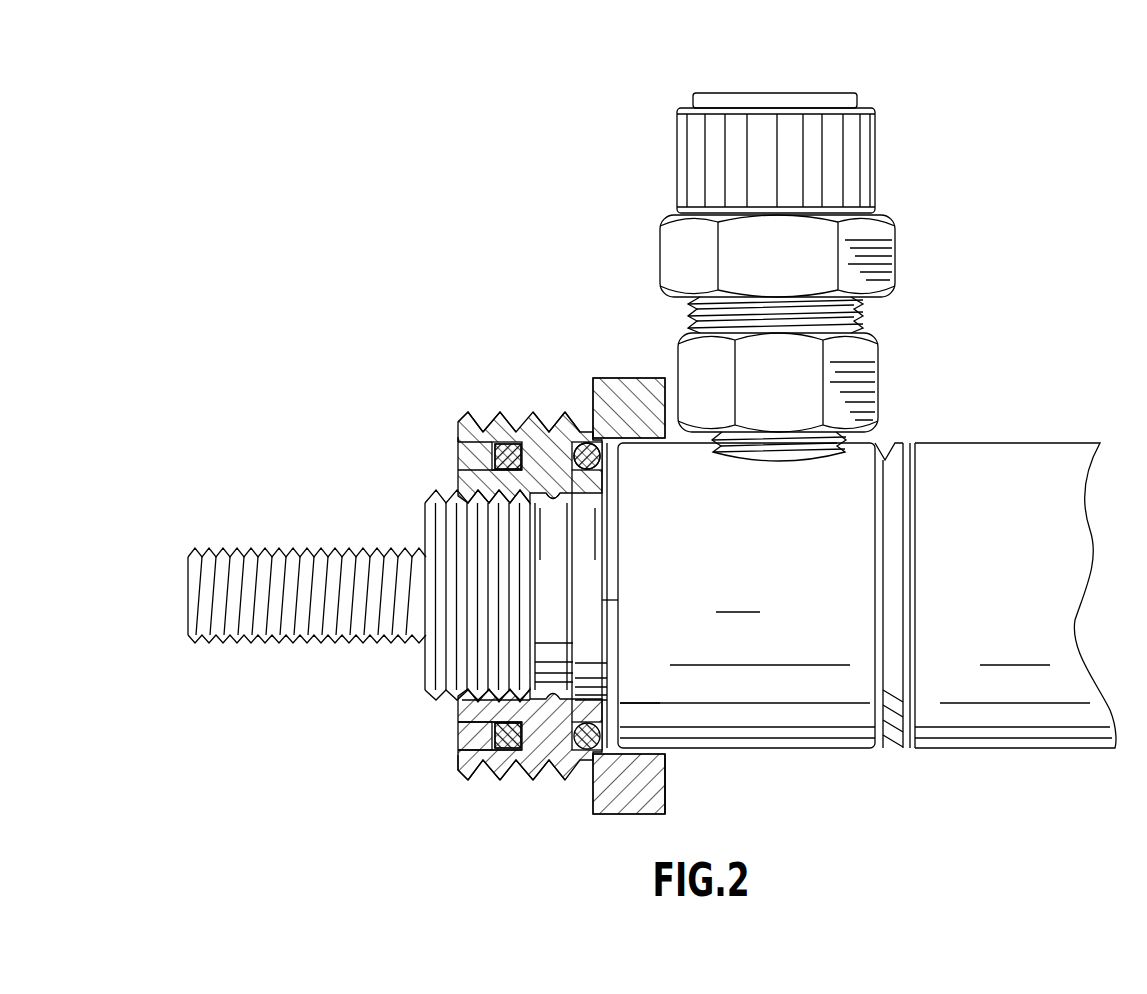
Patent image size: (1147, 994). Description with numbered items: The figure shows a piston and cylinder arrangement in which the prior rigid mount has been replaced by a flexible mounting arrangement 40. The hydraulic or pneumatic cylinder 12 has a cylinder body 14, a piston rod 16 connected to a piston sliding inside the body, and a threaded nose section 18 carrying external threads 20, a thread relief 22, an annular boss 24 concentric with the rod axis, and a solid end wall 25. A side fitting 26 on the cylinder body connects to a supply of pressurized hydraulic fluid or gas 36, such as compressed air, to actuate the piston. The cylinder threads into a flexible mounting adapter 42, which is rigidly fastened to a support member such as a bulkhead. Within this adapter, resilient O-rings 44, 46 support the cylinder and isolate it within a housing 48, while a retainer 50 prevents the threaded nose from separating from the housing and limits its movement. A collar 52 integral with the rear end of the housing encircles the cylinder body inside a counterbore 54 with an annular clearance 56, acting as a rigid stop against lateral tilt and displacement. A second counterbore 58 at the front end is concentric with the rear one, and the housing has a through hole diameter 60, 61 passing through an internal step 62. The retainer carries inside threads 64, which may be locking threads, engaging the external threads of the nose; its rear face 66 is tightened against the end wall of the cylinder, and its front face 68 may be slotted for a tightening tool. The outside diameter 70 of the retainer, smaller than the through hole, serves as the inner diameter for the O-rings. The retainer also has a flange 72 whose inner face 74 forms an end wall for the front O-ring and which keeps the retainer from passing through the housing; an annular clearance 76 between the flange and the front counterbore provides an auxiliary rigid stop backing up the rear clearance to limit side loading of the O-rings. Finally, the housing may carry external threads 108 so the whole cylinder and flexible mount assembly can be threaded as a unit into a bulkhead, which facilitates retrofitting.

The hydraulic or pneumatic cylinder 12 is at (978, 443).
The cylinder body 14 is at (1023, 456).
The piston rod 16 is at (252, 549).
The threaded nose section 18 is at (450, 555).
The external threads 20 is at (430, 497).
The thread relief 22 is at (598, 530).
The annular boss 24 is at (600, 483).
The solid end wall 25 is at (604, 562).
The side fitting 26 is at (877, 148).
The supply of pressurized hydraulic fluid or gas 36 is at (823, 84).
The flexible mounting arrangement 40 is at (505, 182).
The flexible mounting adapter 42 is at (590, 187).
The front O-ring 44 is at (491, 430).
The rear O-ring 46 is at (586, 430).
The housing 48 is at (571, 430).
The retainer 50 is at (462, 722).
The collar 52 is at (630, 390).
The counterbore 54 is at (622, 790).
The annular clearance 56 is at (670, 753).
The second counterbore 58 is at (470, 768).
The through hole diameter 60 is at (524, 772).
The through hole diameter 61 is at (556, 430).
The internal step 62 is at (531, 430).
The inside threads 64 is at (600, 644).
The rear face 66 is at (620, 707).
The front face 68 is at (460, 718).
The outside diameter 70 is at (572, 777).
The flange 72 is at (470, 733).
The inner face 74 is at (486, 785).
The annular clearance 76 is at (468, 748).
The external threads 108 is at (476, 428).